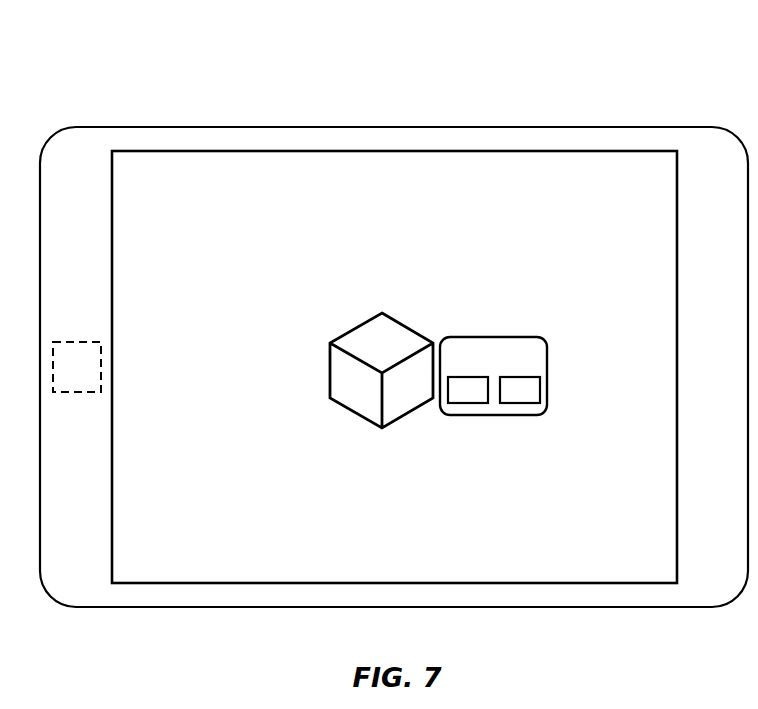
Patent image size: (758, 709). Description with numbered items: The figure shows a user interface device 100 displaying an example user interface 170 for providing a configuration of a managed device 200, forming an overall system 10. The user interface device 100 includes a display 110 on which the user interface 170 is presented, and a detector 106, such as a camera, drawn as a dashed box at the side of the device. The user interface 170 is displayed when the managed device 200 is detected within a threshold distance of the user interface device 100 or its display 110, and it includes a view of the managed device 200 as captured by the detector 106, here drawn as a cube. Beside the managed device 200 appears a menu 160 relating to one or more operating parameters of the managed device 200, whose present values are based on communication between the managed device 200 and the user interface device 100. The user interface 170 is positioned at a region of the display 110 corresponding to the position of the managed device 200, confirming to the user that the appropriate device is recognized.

The system 10 is at (293, 92).
The user interface device 100 is at (27, 62).
The detector 106 is at (86, 342).
The display 110 is at (452, 166).
The menu 160 is at (490, 338).
The user interface 170 is at (203, 255).
The managed device 200 is at (417, 328).